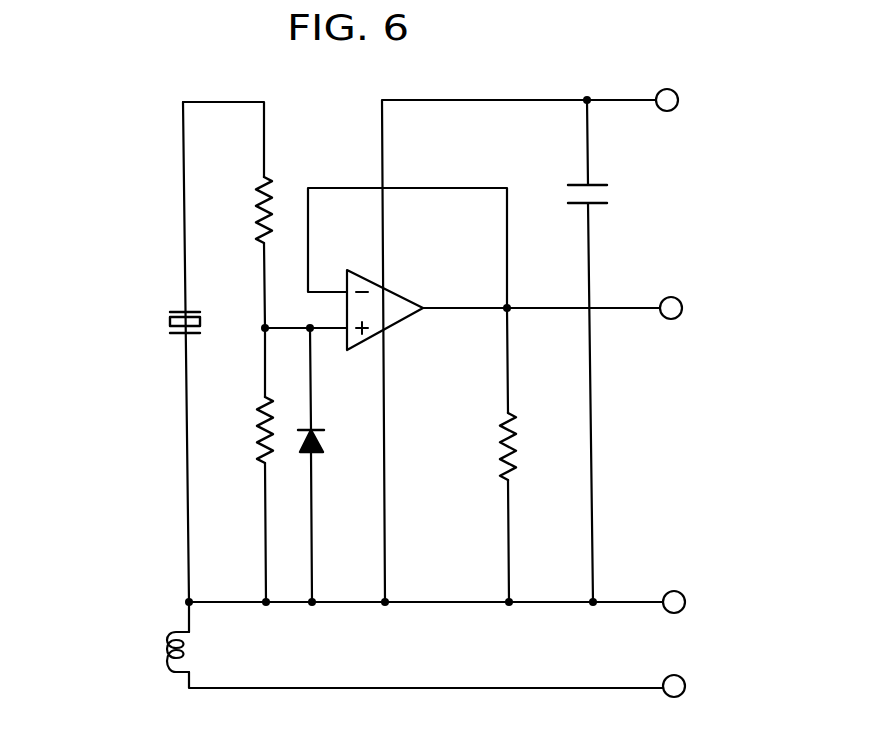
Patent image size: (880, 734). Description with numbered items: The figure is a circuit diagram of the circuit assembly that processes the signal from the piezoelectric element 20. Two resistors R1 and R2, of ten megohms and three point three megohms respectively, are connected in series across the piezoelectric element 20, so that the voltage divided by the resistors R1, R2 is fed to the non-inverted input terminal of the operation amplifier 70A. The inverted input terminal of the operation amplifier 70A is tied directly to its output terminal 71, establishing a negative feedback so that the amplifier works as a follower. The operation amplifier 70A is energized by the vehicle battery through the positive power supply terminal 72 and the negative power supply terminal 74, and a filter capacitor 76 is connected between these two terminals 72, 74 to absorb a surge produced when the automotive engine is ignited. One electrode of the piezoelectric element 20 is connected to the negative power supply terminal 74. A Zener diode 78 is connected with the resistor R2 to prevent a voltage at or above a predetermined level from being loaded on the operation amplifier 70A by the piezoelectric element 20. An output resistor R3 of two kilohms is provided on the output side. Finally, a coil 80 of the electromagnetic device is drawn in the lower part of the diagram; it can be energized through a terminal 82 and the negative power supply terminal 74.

The piezoelectric element 20 is at (166, 312).
The operation amplifier 70A is at (400, 290).
The output terminal 71 is at (683, 306).
The positive power supply terminal 72 is at (679, 100).
The negative power supply terminal 74 is at (686, 600).
The filter capacitor 76 is at (608, 197).
The Zener diode 78 is at (320, 441).
The coil 80 is at (166, 657).
The terminal 82 is at (686, 683).
The resistor R1 is at (268, 196).
The resistor R2 is at (262, 441).
The output resistor R3 is at (514, 446).